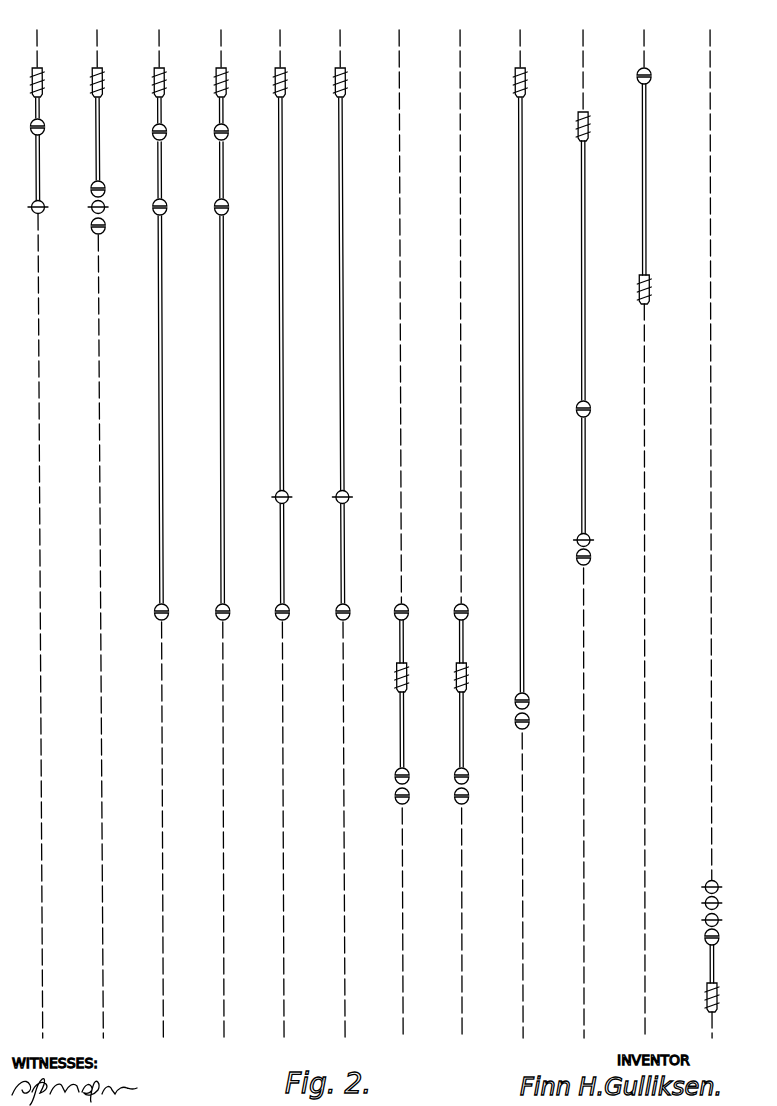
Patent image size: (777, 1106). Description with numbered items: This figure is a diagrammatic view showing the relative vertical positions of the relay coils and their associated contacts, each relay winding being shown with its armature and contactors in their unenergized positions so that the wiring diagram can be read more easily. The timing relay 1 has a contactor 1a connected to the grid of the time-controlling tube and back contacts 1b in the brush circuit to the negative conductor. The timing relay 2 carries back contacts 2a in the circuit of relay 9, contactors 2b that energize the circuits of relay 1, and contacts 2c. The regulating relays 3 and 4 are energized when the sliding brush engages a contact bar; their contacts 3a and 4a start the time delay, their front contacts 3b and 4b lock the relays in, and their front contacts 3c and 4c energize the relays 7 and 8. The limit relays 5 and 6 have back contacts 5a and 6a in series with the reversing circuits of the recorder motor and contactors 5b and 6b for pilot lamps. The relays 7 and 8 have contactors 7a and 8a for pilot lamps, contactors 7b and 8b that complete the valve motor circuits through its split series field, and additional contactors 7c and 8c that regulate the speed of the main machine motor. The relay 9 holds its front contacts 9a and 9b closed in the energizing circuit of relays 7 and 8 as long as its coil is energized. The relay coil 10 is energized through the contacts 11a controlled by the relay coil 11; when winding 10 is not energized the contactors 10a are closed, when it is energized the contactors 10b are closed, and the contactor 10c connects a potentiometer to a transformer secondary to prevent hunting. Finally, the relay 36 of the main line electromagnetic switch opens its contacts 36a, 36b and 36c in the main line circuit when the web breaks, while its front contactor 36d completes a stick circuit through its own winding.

The timing relay 1 is at (50, 523).
The contactor of relay 1 1a is at (48, 123).
The back contacts of timing relay 1 1b is at (48, 200).
The timing relay 2 is at (113, 523).
The back contacts of timing relay 2 2a is at (110, 207).
The contactors of relay 2 2b is at (112, 185).
The relay contacts 2c is at (112, 230).
The regulating relay 3 is at (173, 523).
The relay contacts 3a is at (171, 202).
The front contacts of relay 3 3b is at (171, 128).
The front contacts of relay 3 3c is at (173, 604).
The regulating relay 4 is at (235, 523).
The relay contacts 4a is at (232, 202).
The front contacts of relay 4 4b is at (232, 127).
The front contacts of relay 4 4c is at (235, 604).
The limit relay 5 is at (293, 523).
The back contacts of relay 5 5a is at (291, 489).
The contactors of relay 5 5b is at (294, 603).
The limit relay 6 is at (354, 523).
The back contacts of relay 6 6a is at (352, 489).
The contactors of relay 6 6b is at (356, 602).
The relay 7 is at (415, 523).
The contactors of relay 7 7a is at (412, 602).
The relay contactors 7b is at (414, 767).
The additional contactors of relay 7 7c is at (416, 809).
The relay 8 is at (475, 523).
The contactors of relay 8 8a is at (474, 602).
The relay contactors 8b is at (476, 767).
The additional contactors of relay 8 8c is at (475, 809).
The relay 9 is at (536, 523).
The front contacts of relay 9 9a is at (535, 694).
The front contacts of relay 9 9b is at (537, 719).
The relay coil 10 is at (599, 523).
The relay contactors 10a is at (599, 533).
The relay contactors 10b is at (601, 555).
The relay contactor 10c is at (599, 401).
The relay coil 11 is at (658, 523).
The contacts of relay 11 11a is at (659, 68).
The relay of main line electromagnetic switch 36 is at (729, 523).
The main line contact 36a is at (728, 882).
The main line contact 36b is at (730, 898).
The main line contact 36c is at (729, 916).
The front contactor of switch 36 36d is at (731, 935).